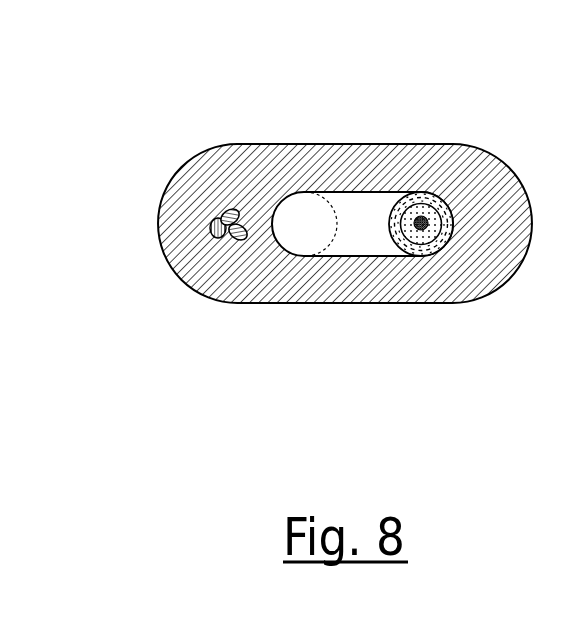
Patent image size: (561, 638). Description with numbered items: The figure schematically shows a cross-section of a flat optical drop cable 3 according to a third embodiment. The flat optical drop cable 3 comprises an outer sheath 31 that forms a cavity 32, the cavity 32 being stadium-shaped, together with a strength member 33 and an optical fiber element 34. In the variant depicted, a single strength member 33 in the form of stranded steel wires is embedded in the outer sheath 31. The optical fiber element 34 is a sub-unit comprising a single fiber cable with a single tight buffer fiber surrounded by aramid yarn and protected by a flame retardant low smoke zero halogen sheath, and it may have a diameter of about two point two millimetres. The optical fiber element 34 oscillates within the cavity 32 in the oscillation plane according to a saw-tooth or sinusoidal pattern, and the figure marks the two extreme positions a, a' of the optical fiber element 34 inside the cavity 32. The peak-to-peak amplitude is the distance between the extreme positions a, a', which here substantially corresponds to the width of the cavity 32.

The flat optical drop cable 3 is at (338, 230).
The outer sheath 31 is at (450, 191).
The cavity 32 is at (363, 211).
The strength member 33 is at (220, 213).
The optical fiber element 34 is at (443, 245).
The extreme position a is at (370, 346).
The extreme position a' is at (266, 345).